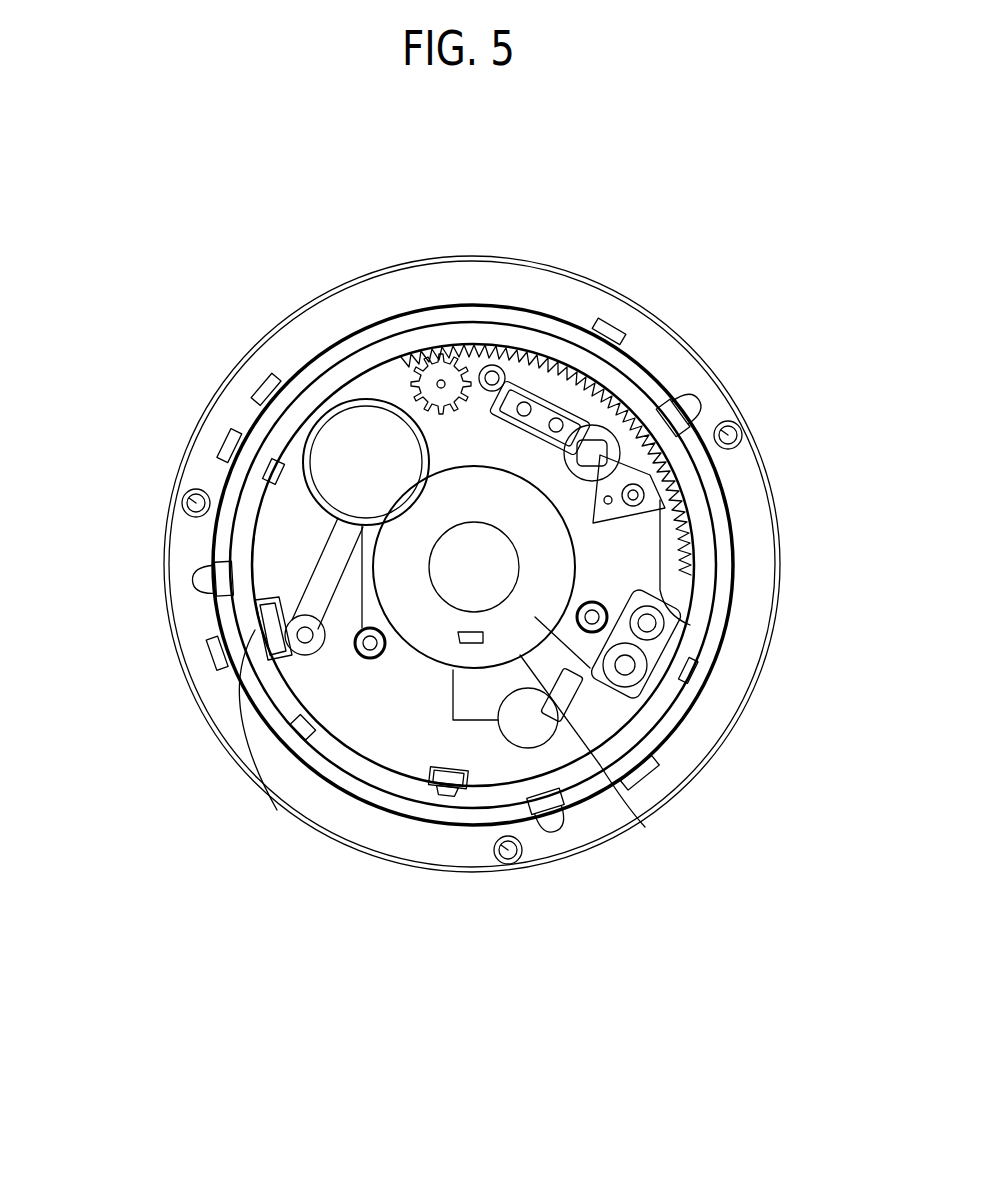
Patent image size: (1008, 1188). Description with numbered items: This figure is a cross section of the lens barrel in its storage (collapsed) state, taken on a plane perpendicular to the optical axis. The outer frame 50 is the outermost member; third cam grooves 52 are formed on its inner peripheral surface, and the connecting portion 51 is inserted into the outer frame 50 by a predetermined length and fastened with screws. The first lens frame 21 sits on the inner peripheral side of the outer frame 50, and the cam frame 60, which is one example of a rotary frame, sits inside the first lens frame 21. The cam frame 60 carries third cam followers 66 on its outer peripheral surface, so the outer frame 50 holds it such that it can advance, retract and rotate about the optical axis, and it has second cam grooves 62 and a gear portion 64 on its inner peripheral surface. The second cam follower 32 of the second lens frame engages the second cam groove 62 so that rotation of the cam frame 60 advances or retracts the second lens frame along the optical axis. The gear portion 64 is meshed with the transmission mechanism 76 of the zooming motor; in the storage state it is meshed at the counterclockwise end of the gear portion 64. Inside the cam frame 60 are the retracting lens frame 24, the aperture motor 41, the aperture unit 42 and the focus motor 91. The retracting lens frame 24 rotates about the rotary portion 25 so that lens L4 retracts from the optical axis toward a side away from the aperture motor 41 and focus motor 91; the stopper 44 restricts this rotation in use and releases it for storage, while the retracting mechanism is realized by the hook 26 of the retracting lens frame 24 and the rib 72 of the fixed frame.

The first lens frame 21 is at (717, 580).
The retracting lens frame 24 is at (332, 413).
The rotary portion 25 is at (305, 655).
The hook 26 is at (284, 640).
The second cam follower 32 is at (270, 465).
The aperture motor 41 is at (533, 720).
The aperture unit 42 is at (570, 697).
The stopper 44 is at (462, 645).
The outer frame 50 is at (485, 283).
The connecting portion 51 is at (187, 503).
The third cam grooves 52 is at (688, 400).
The cam frame 60 is at (700, 532).
The second cam grooves 62 is at (268, 480).
The gear portion 64 is at (620, 400).
The third cam followers 66 is at (200, 548).
The rib 72 is at (262, 690).
The transmission mechanism 76 is at (439, 358).
The focus motor 91 is at (640, 590).
The lens L4 is at (368, 447).